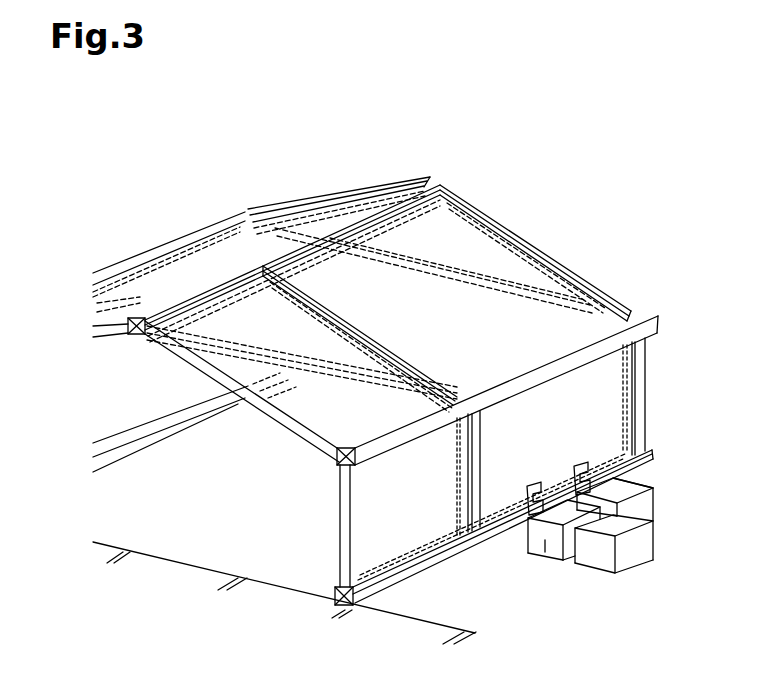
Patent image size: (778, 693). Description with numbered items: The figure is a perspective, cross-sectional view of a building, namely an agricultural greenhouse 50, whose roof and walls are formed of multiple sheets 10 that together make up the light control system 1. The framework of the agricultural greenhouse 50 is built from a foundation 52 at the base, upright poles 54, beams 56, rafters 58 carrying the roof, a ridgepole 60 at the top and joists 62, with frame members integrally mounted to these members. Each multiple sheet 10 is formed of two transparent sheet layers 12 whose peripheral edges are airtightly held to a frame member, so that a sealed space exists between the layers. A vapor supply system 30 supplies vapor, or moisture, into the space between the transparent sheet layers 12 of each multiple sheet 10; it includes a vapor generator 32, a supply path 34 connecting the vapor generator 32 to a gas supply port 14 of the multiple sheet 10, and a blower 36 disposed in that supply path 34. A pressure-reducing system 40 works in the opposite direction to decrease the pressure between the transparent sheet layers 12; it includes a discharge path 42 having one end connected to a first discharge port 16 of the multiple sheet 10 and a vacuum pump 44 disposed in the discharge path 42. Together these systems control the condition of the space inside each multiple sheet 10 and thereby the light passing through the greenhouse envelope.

The light control system 1 is at (637, 537).
The multiple sheet 10 is at (512, 238).
The transparent sheet layer 12 is at (280, 420).
The gas supply port 14 is at (526, 485).
The first discharge port 16 is at (580, 464).
The vapor supply system 30 is at (623, 558).
The vapor generator 32 is at (645, 542).
The supply path 34 is at (520, 553).
The blower 36 is at (553, 553).
The pressure-reducing system 40 is at (652, 502).
The discharge path 42 is at (620, 478).
The vacuum pump 44 is at (645, 503).
The agricultural greenhouse 50 is at (276, 176).
The foundation 52 is at (390, 583).
The pole 54 is at (644, 356).
The beam 56 is at (596, 336).
The rafter 58 is at (568, 273).
The ridgepole 60 is at (406, 188).
The joist 62 is at (428, 262).